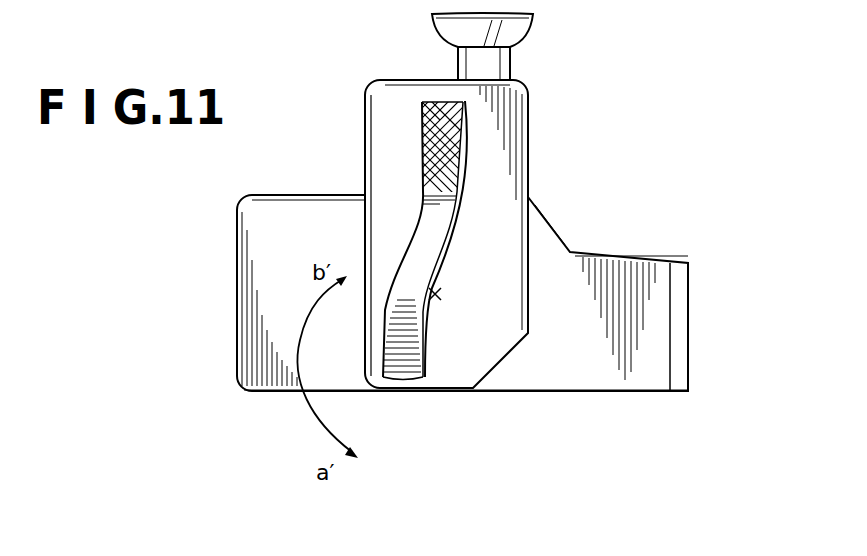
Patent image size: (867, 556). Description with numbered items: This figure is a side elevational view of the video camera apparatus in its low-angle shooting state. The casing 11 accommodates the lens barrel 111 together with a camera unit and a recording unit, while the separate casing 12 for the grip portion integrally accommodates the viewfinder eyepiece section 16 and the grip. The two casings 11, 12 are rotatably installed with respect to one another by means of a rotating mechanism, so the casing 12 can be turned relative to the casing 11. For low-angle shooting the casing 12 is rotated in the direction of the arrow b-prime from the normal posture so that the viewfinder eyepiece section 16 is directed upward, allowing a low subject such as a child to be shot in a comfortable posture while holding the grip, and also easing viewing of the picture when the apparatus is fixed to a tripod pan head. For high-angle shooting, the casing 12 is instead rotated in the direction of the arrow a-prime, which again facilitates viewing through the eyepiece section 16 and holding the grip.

The casing 11 is at (637, 375).
The lens barrel 111 is at (658, 311).
The casing for the grip portion 12 is at (388, 113).
The viewfinder eyepiece section 16 is at (505, 33).